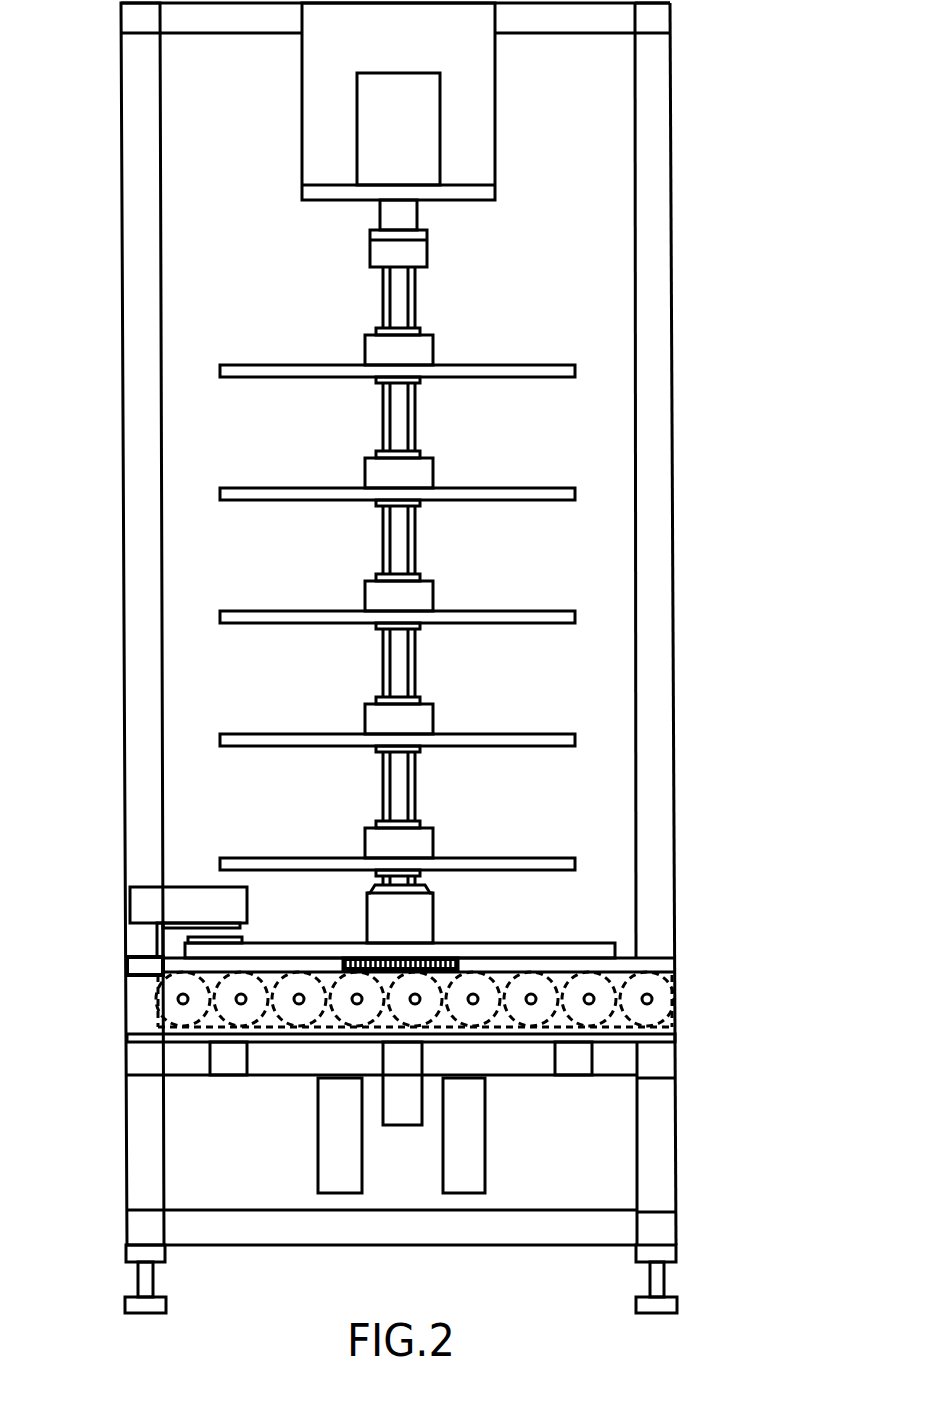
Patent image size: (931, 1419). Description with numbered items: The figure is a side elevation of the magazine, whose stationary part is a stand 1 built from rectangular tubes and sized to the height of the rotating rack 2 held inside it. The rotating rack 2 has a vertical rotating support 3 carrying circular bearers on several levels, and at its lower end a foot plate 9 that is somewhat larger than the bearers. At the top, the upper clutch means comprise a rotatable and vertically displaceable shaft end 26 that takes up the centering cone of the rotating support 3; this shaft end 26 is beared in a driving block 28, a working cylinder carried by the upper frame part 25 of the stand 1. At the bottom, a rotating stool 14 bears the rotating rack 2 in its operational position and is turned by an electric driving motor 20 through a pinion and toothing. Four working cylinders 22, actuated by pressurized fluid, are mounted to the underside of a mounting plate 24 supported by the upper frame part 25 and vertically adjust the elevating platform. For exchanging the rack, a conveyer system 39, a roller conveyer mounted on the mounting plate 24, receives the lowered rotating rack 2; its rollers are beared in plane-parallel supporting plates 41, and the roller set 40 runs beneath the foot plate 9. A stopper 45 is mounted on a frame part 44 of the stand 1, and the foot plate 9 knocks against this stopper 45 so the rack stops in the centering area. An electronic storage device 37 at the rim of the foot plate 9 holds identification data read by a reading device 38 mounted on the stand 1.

The stand 1 is at (115, 308).
The rotating rack 2 is at (492, 436).
The rotating support 3 is at (412, 541).
The foot plate 9 is at (543, 955).
The rotating stool 14 is at (445, 957).
The electric driving motor 20 is at (405, 1105).
The working cylinders 22 is at (467, 1165).
The mounting plate 24 is at (676, 1038).
The upper frame part 25 is at (592, 1063).
The shaft end 26 is at (372, 255).
The driving block 28 is at (408, 122).
The electronic storage device 37 is at (242, 942).
The reading device 38 is at (183, 905).
The conveyer system 39 is at (143, 1002).
The rollers 40 is at (227, 1020).
The supporting plates 41 is at (273, 1022).
The frame part 44 is at (676, 965).
The stopper 45 is at (127, 962).